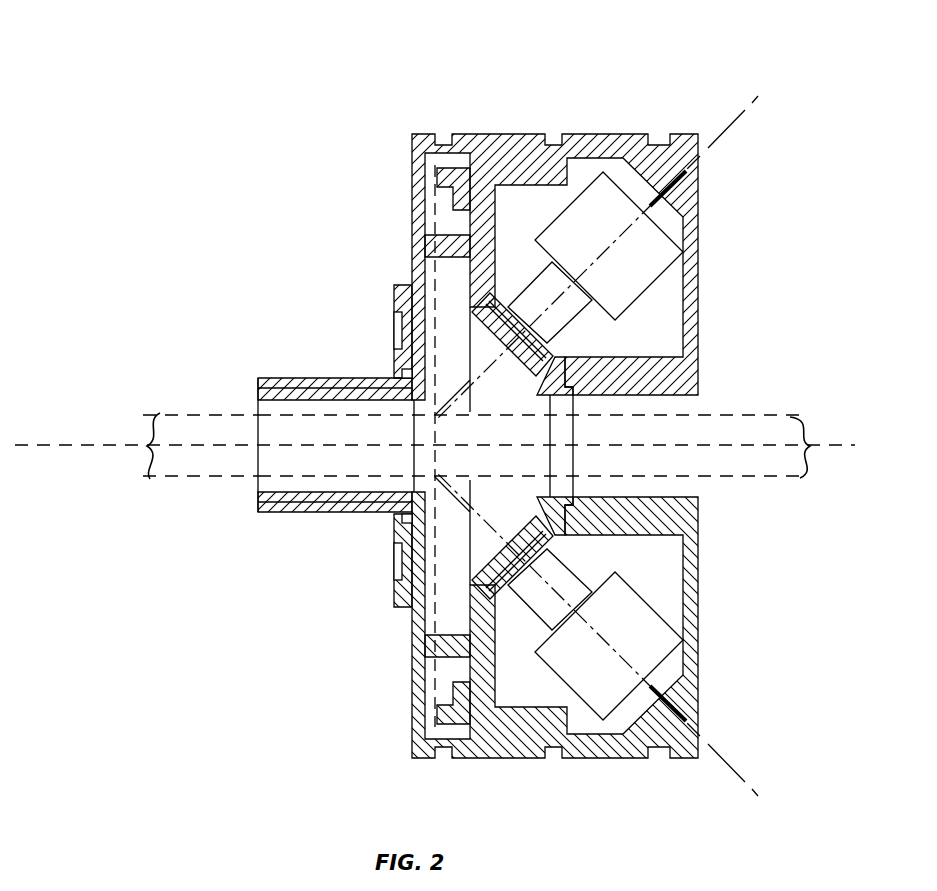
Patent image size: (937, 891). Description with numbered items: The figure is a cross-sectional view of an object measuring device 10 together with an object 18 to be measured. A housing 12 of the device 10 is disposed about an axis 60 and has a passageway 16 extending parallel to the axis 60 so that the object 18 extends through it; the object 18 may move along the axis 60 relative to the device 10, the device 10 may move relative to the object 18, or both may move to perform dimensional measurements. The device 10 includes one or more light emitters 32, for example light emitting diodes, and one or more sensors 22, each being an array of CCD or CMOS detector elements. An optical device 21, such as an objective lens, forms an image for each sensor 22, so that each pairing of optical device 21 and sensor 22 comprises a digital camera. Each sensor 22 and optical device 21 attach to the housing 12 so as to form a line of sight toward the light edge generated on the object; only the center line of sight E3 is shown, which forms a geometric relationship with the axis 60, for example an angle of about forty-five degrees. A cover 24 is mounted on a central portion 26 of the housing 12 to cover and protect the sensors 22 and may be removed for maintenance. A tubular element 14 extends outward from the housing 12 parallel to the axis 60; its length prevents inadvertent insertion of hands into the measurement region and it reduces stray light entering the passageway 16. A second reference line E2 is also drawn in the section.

The object measuring device 10 is at (232, 30).
The housing 12 is at (693, 370).
The tubular element 14 is at (320, 516).
The passageway 16 is at (272, 392).
The object 18 is at (790, 417).
The optical device 21 is at (573, 303).
The sensor 22 is at (648, 267).
The cover 24 is at (688, 195).
The central portion 26 is at (500, 146).
The light emitter 32 is at (438, 172).
The axis 60 is at (70, 448).
The second axis E2 is at (432, 302).
The center line of sight E3 is at (738, 118).